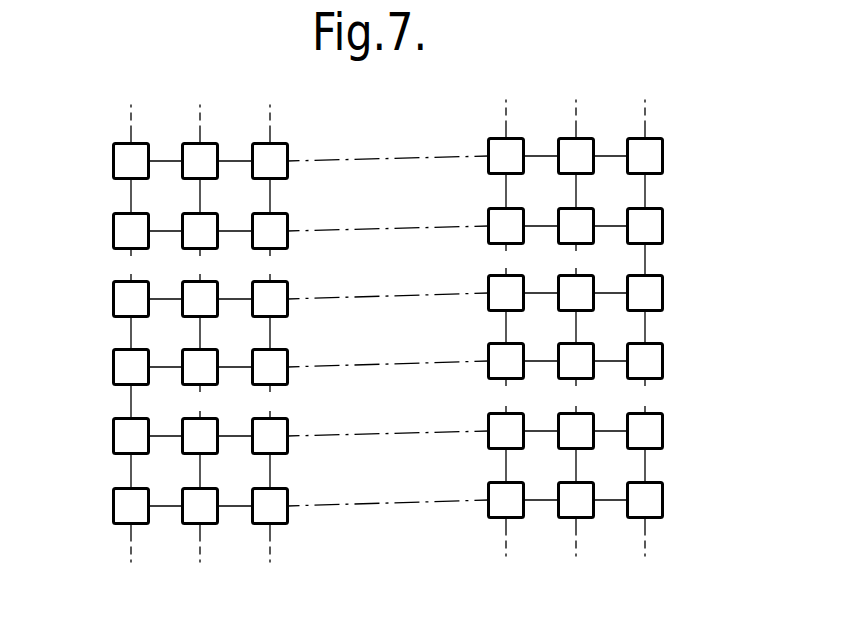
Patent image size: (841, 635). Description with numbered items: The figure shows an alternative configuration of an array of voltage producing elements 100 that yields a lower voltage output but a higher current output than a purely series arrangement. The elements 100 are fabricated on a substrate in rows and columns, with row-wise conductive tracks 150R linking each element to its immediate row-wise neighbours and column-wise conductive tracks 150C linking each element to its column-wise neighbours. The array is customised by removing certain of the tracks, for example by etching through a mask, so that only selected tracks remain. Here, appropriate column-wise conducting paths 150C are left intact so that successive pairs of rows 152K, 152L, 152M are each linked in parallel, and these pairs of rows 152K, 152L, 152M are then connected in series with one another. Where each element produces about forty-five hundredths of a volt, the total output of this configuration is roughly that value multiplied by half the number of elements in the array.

The voltage producing element 100 is at (123, 452).
The row-wise conductive track 150R is at (167, 301).
The column-wise conductive track 150C is at (129, 396).
The pair of rows 152K is at (107, 143).
The pair of rows 152L is at (108, 277).
The pair of rows 152M is at (667, 408).